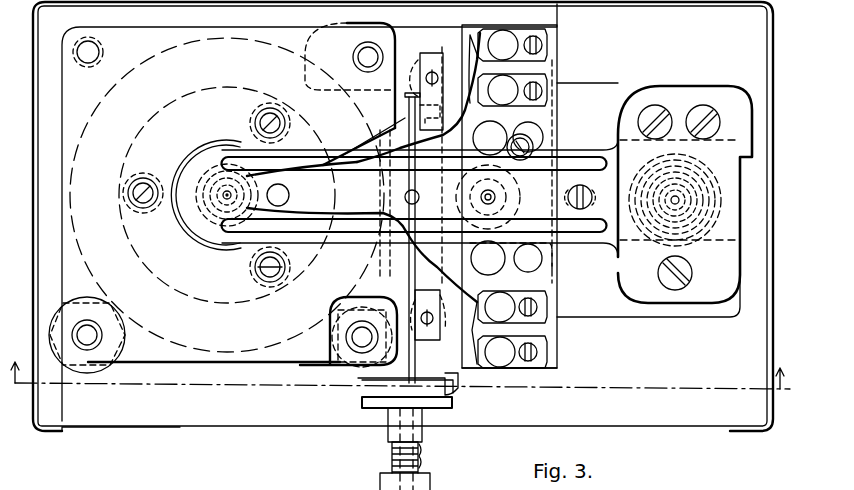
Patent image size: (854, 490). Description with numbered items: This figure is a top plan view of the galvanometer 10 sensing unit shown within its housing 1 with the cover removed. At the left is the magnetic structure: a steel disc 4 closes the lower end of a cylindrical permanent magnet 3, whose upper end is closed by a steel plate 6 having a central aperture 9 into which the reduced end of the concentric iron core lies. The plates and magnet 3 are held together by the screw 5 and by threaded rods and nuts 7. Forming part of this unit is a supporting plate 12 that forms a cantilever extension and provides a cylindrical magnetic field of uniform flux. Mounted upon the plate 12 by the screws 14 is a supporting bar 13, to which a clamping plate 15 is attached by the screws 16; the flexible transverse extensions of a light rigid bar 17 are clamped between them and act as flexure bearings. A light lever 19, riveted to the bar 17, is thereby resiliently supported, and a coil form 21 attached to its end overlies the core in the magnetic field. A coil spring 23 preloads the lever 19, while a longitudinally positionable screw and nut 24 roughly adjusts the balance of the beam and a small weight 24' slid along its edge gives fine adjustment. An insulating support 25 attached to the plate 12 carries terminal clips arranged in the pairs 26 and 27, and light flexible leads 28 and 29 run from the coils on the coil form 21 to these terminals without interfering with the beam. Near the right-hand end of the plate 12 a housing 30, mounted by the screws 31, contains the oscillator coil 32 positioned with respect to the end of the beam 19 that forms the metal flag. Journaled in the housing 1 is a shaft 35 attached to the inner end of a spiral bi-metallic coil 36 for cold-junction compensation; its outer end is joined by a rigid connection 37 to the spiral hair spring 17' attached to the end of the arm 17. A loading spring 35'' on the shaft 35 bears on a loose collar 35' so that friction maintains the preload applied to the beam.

The housing 1 is at (152, 425).
The cylindrical permanent magnet 3 is at (165, 278).
The steel disc 4 is at (399, 401).
The screw 5 is at (145, 180).
The steel plate 6 is at (72, 92).
The threaded rods and nuts 7 is at (97, 53).
The central aperture 9 is at (183, 243).
The galvanometer 10 is at (592, 346).
The supporting plate 12 is at (443, 33).
The supporting bar 13 is at (440, 340).
The screws 14 is at (443, 68).
The clamping plate 15 is at (407, 290).
The screws 16 is at (440, 116).
The light rigid bar 17 is at (425, 200).
The spiral hair spring 17' is at (438, 390).
The light lever 19 is at (213, 152).
The coil form 21 is at (222, 251).
The coil spring 23 is at (503, 197).
The screw and nut 24 is at (581, 233).
The small weight 24' is at (557, 133).
The insulating support 25 is at (555, 373).
The terminal clips 26 is at (548, 100).
The terminal clips 27 is at (542, 342).
The flexible lead 28 is at (341, 161).
The flexible lead 29 is at (358, 212).
The housing 30 is at (620, 123).
The screws 31 is at (703, 107).
The oscillator coil 32 is at (697, 200).
The shaft 35 is at (388, 478).
The loose collar 35' is at (437, 446).
The loading spring 35'' is at (443, 463).
The spiral bi-metallic coil 36 is at (370, 409).
The rigid connection 37 is at (453, 404).